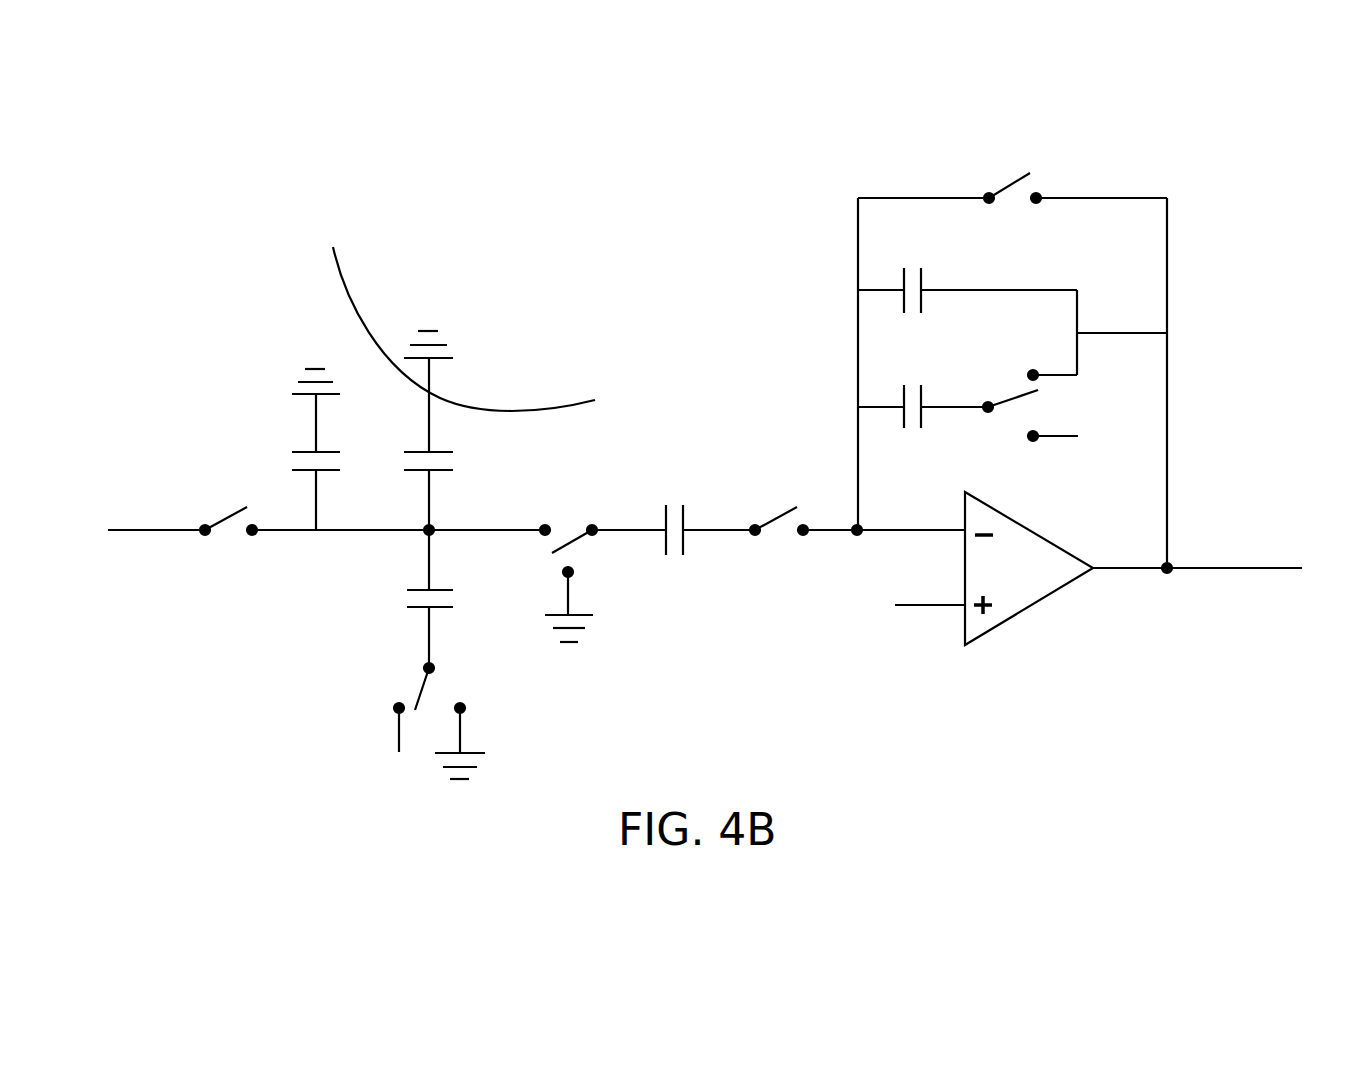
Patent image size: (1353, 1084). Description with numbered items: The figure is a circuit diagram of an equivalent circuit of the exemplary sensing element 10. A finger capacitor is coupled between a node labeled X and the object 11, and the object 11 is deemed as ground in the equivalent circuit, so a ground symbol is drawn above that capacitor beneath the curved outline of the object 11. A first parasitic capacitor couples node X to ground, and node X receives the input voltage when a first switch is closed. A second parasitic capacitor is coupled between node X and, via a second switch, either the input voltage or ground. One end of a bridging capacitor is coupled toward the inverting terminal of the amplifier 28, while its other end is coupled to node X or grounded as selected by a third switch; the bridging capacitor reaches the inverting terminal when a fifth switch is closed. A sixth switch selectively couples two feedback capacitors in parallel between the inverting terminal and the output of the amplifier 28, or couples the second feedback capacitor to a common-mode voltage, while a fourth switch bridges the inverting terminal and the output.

The sensing element 10 is at (134, 162).
The object 11 is at (343, 295).
The amplifier 28 is at (1038, 583).